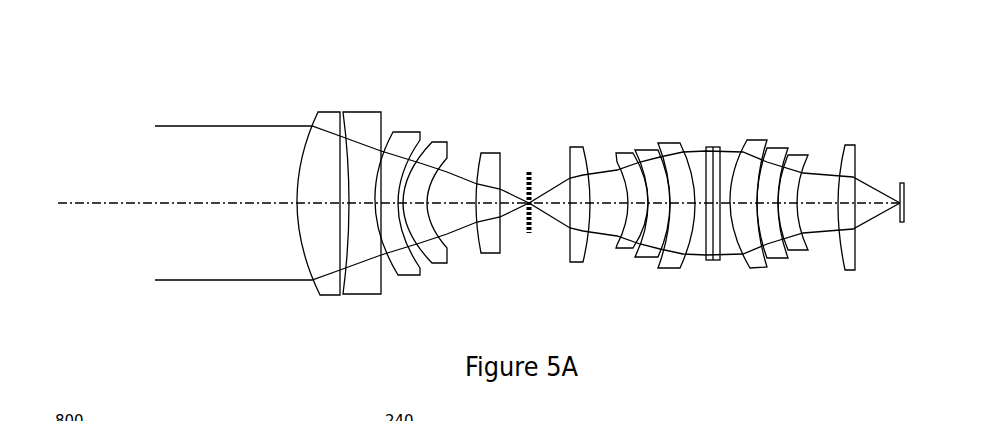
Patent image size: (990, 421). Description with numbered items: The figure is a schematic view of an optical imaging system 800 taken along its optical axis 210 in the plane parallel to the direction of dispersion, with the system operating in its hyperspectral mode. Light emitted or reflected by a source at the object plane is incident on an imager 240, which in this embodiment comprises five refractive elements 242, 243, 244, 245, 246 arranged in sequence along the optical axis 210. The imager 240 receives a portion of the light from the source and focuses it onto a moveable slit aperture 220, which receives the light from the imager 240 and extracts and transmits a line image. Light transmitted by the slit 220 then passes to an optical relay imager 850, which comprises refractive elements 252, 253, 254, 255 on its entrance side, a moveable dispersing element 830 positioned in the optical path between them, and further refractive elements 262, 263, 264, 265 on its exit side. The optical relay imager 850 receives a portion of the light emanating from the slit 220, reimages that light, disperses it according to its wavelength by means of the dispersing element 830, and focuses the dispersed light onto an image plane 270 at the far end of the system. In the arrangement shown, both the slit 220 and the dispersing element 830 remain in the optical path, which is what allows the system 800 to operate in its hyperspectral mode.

The optical imaging system 800 is at (118, 79).
The optical axis 210 is at (93, 204).
The imager 240 is at (502, 112).
The refractive element 242 is at (330, 297).
The refractive element 243 is at (358, 296).
The refractive element 244 is at (405, 276).
The refractive element 245 is at (438, 266).
The refractive element 246 is at (485, 254).
The moveable slit 220 is at (529, 236).
The optical relay imager 850 is at (875, 148).
The refractive element 252 is at (575, 263).
The refractive element 253 is at (621, 249).
The refractive element 254 is at (645, 258).
The refractive element 255 is at (668, 269).
The moveable dispersing element 830 is at (710, 261).
The refractive element 262 is at (758, 269).
The refractive element 263 is at (770, 259).
The refractive element 264 is at (802, 251).
The refractive element 265 is at (850, 271).
The image plane 270 is at (905, 190).